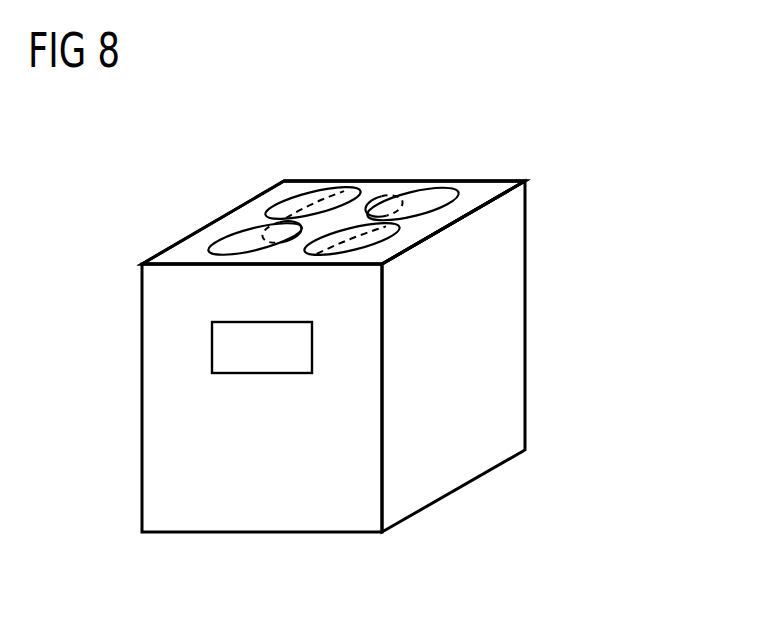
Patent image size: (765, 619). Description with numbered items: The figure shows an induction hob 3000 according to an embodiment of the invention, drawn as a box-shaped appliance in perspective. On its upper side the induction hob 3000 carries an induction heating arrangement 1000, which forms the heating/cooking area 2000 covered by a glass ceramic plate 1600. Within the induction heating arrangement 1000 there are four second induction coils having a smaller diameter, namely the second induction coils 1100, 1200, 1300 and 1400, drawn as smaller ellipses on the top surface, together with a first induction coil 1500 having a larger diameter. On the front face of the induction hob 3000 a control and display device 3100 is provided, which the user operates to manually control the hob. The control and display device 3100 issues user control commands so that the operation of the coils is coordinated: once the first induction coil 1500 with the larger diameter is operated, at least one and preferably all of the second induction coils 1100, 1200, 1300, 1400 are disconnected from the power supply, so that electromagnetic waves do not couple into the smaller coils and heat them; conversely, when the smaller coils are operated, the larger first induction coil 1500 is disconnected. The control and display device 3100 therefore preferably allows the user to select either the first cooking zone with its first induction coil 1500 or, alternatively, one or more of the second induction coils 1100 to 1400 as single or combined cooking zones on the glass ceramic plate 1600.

The induction heating arrangement 1000 is at (243, 207).
The second induction coil 1100 is at (425, 189).
The second induction coil 1200 is at (400, 233).
The second induction coil 1300 is at (208, 240).
The second induction coil 1400 is at (308, 192).
The first induction coil 1500 is at (373, 190).
The glass ceramic plate 1600 is at (487, 187).
The heating/cooking area 2000 is at (470, 187).
The induction hob 3000 is at (562, 337).
The control and display device 3100 is at (212, 350).